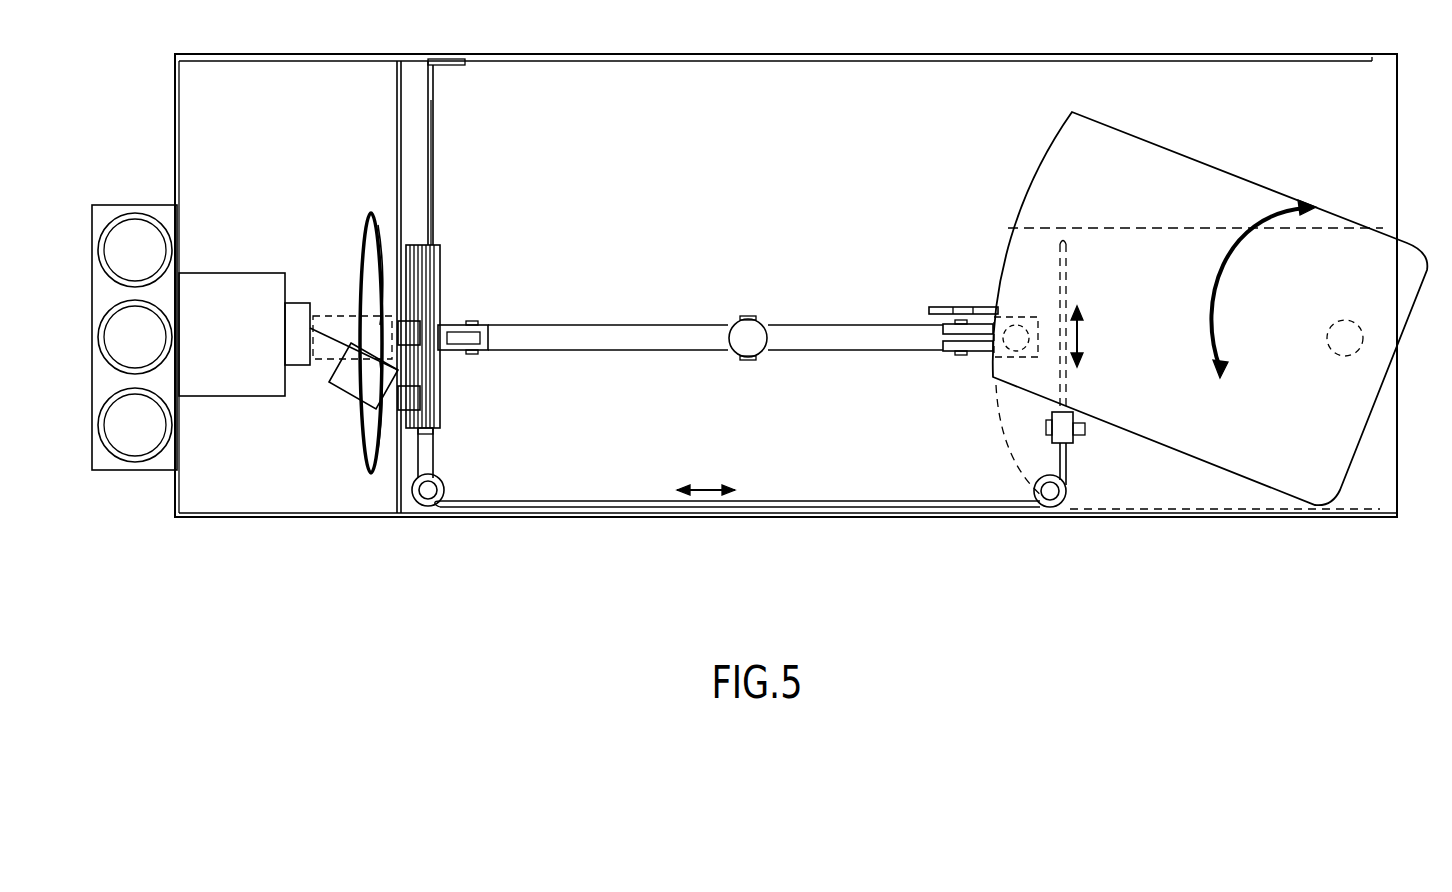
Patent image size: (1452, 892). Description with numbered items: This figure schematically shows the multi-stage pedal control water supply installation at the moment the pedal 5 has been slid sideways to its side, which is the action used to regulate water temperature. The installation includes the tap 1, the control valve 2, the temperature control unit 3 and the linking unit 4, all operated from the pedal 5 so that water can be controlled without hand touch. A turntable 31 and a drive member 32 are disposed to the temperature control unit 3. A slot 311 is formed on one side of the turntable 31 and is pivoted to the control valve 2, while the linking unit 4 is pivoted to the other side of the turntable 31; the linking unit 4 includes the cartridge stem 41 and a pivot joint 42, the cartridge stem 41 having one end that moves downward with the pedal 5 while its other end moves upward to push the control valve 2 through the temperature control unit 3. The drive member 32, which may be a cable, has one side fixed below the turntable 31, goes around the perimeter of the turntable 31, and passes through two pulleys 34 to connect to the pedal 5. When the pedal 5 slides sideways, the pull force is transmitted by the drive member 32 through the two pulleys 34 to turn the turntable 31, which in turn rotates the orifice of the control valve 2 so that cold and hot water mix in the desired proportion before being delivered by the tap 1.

The tap 1 is at (223, 290).
The control valve 2 is at (343, 380).
The temperature control unit 3 is at (470, 268).
The turntable 31 is at (410, 257).
The slot 311 is at (403, 412).
The drive member 32 is at (900, 509).
The pulleys 34 is at (422, 505).
The linking unit 4 is at (718, 341).
The cartridge stem 41 is at (637, 342).
The pivot joint 42 is at (750, 340).
The pedal 5 is at (1222, 486).